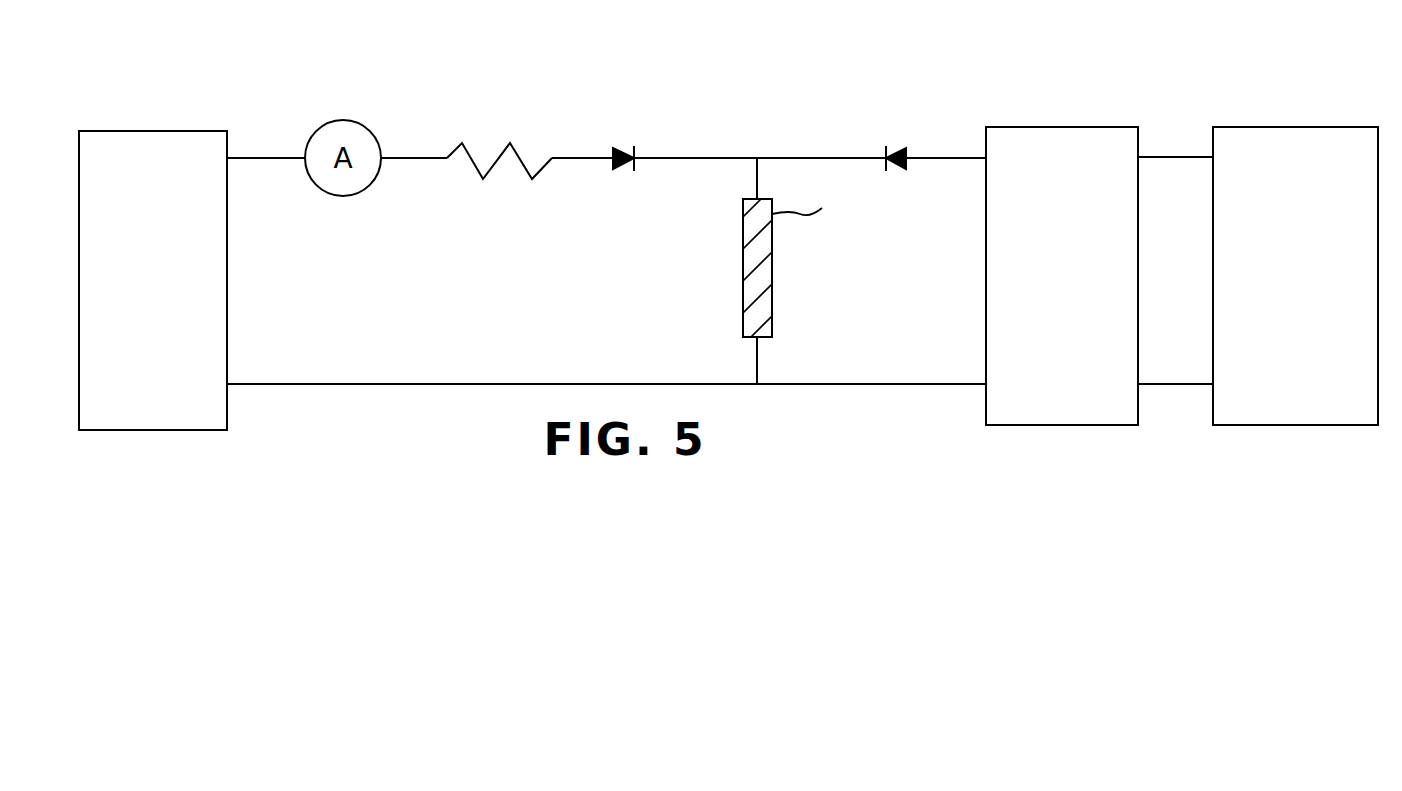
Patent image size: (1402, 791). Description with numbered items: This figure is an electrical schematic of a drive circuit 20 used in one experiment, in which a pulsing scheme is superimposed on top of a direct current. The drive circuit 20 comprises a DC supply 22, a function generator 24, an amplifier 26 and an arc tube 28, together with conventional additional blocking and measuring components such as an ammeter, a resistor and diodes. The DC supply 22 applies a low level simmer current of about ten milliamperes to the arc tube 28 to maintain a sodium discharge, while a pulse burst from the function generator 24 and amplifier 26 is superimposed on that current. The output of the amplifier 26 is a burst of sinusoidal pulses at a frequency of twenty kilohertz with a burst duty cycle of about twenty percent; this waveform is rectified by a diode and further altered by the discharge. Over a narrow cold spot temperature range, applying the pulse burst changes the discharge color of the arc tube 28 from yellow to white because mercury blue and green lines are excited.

The drive circuit 20 is at (302, 108).
The DC supply 22 is at (227, 213).
The function generator 24 is at (1292, 425).
The amplifier 26 is at (1055, 425).
The arc tube 28 is at (743, 294).